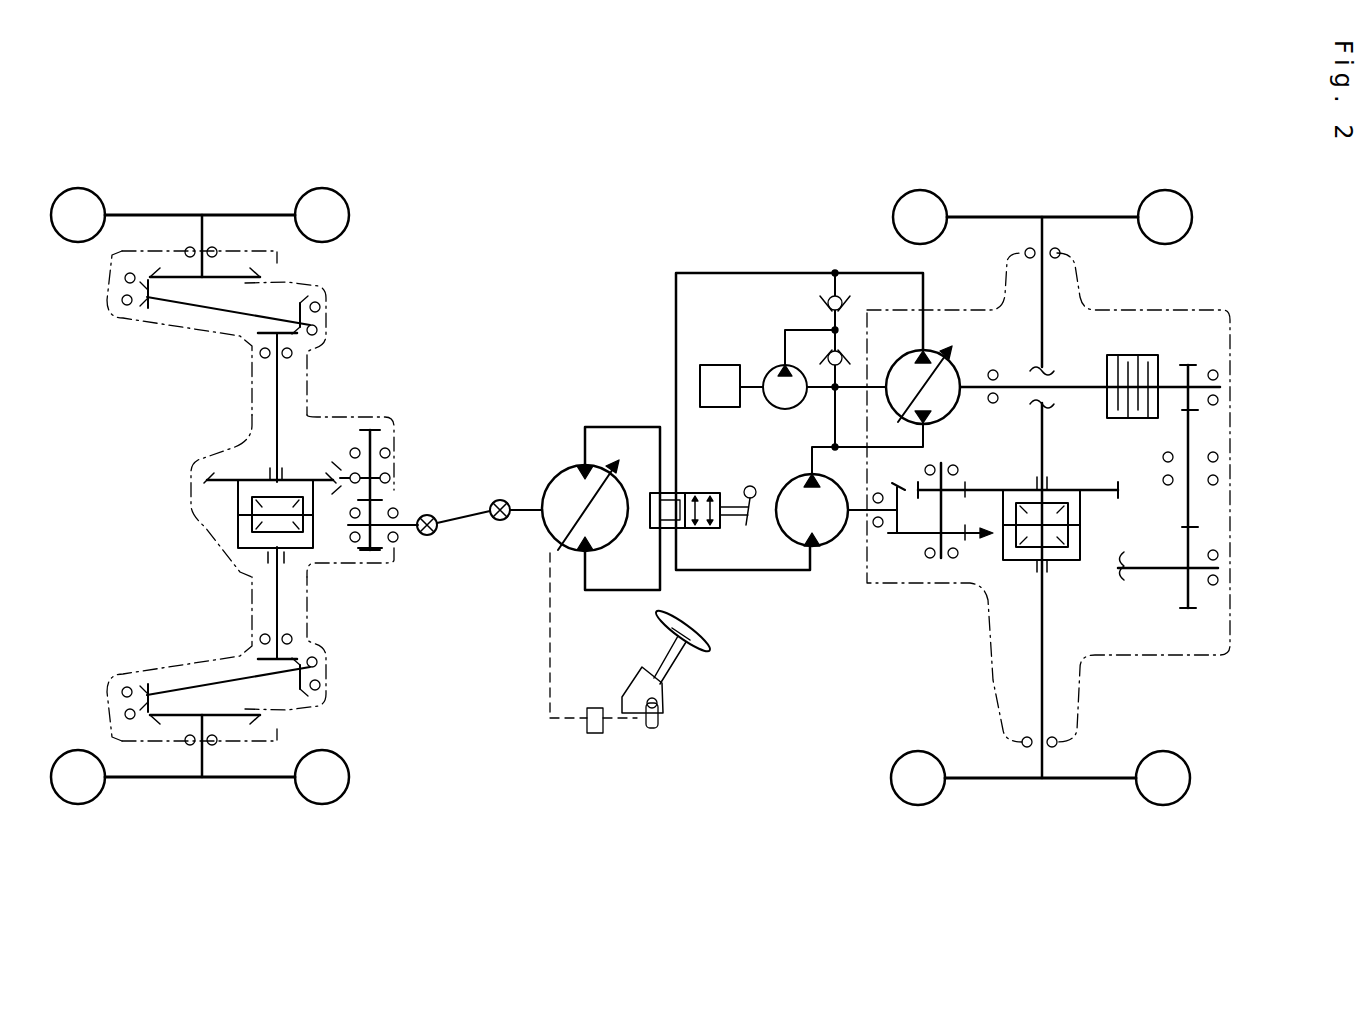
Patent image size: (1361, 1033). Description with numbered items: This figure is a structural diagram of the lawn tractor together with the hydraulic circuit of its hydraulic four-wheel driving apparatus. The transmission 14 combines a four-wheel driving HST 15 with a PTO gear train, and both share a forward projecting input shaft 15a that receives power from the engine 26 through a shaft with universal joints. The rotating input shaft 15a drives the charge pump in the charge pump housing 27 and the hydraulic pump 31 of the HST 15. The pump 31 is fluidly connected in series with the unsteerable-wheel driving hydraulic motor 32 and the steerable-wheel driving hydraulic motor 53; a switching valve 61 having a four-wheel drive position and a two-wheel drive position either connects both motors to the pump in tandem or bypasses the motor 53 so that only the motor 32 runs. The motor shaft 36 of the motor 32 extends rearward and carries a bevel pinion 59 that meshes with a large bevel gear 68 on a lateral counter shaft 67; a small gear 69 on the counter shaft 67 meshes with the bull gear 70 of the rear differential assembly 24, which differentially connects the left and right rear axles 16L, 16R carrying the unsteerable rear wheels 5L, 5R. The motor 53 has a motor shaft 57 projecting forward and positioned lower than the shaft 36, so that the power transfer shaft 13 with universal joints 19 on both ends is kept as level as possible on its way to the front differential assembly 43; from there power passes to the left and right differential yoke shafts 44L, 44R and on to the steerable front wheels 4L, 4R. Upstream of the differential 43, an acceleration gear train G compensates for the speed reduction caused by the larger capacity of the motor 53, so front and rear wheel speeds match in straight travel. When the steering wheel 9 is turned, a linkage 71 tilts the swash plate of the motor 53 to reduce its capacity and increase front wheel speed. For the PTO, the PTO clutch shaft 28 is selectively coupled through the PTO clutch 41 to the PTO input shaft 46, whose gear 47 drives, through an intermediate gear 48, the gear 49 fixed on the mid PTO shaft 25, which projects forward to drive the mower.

The steerable front wheel 4R is at (343, 200).
The steerable front wheel 4L is at (305, 798).
The unsteerable rear wheel 5R is at (938, 192).
The unsteerable rear wheel 5L is at (935, 800).
The differential yoke shaft 44R is at (283, 392).
The differential yoke shaft 44L is at (279, 608).
The acceleration gear train G is at (385, 444).
The front differential assembly 43 is at (228, 516).
The universal joint 19 is at (426, 537).
The power transfer shaft 13 is at (452, 510).
The steerable-wheel driving output shaft 57 is at (522, 508).
The steerable-wheel driving hydraulic motor 53 is at (565, 550).
The linkage 71 is at (549, 692).
The steering wheel 9 is at (704, 652).
The switching valve 61 is at (698, 492).
The engine 26 is at (720, 365).
The charge pump housing 27 is at (770, 370).
The four-wheel driving HST 15 is at (866, 296).
The input shaft 15a is at (822, 393).
The hydraulic pump 31 is at (903, 362).
The unsteerable-wheel driving hydraulic motor 32 is at (790, 542).
The unsteerable-wheel driving output shaft 36 is at (851, 527).
The bevel pinion 59 is at (893, 540).
The counter shaft 67 is at (948, 515).
The small gear 69 is at (952, 474).
The large bevel gear 68 is at (910, 540).
The bull gear 70 is at (1068, 490).
The rear differential assembly 24 is at (1062, 572).
The rear axle 16L is at (1037, 687).
The rear axle 16R is at (1046, 330).
The PTO clutch shaft 28 is at (1072, 386).
The PTO clutch 41 is at (1128, 347).
The PTO input shaft 46 is at (1168, 386).
The gear 47 is at (1203, 372).
The gear 48 is at (1210, 448).
The gear 49 is at (1198, 595).
The mid PTO shaft 25 is at (1155, 576).
The transmission 14 is at (960, 625).